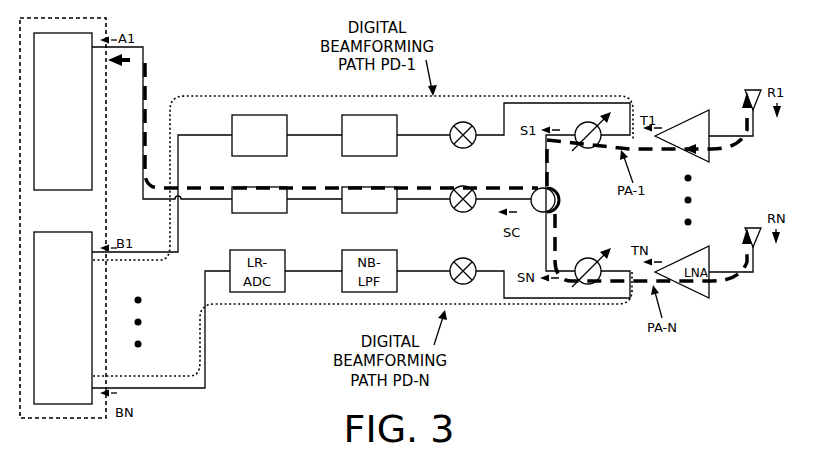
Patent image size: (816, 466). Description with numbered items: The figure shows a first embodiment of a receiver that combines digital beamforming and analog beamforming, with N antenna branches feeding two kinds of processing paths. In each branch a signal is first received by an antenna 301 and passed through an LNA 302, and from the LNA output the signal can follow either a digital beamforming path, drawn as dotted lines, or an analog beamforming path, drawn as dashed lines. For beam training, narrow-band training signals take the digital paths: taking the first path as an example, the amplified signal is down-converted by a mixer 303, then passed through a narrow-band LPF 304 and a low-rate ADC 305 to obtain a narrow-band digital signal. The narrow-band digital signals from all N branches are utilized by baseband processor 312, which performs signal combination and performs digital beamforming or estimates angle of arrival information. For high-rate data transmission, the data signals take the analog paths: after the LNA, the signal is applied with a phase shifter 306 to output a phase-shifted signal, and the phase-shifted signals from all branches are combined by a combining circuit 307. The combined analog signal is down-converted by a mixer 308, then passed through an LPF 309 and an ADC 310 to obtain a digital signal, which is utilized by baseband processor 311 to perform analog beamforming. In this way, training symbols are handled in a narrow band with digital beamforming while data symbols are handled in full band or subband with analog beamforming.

The antenna 301 is at (756, 90).
The LNA 302 is at (688, 119).
The mixer 303 is at (451, 127).
The narrow-band LPF 304 is at (342, 126).
The low-rate ADC 305 is at (232, 126).
The phase shifter 306 is at (582, 122).
The combining circuit 307 is at (535, 186).
The mixer 308 is at (452, 209).
The LPF 309 is at (362, 213).
The ADC 310 is at (254, 213).
The baseband processor 1 311 is at (51, 184).
The baseband processor 2 312 is at (51, 398).